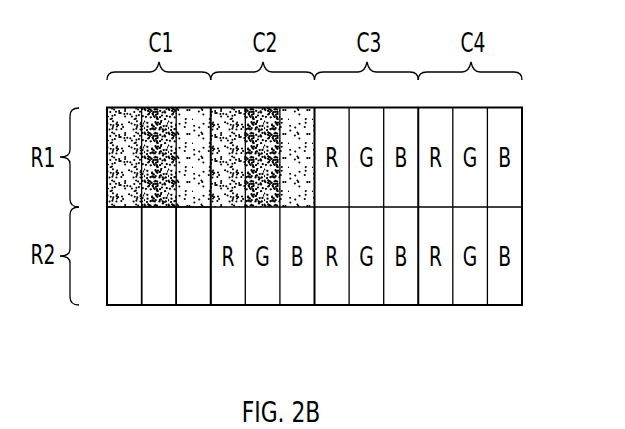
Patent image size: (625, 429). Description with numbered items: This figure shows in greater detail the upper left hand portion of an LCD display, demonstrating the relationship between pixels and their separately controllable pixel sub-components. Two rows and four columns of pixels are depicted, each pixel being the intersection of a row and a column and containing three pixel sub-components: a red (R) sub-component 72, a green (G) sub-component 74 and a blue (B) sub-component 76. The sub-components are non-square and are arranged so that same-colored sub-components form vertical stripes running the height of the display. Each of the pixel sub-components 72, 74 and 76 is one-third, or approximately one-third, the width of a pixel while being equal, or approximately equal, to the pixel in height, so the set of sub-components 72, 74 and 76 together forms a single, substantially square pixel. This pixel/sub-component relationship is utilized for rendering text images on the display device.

The red sub-component 72 is at (119, 298).
The green sub-component 74 is at (160, 300).
The blue sub-component 76 is at (193, 300).